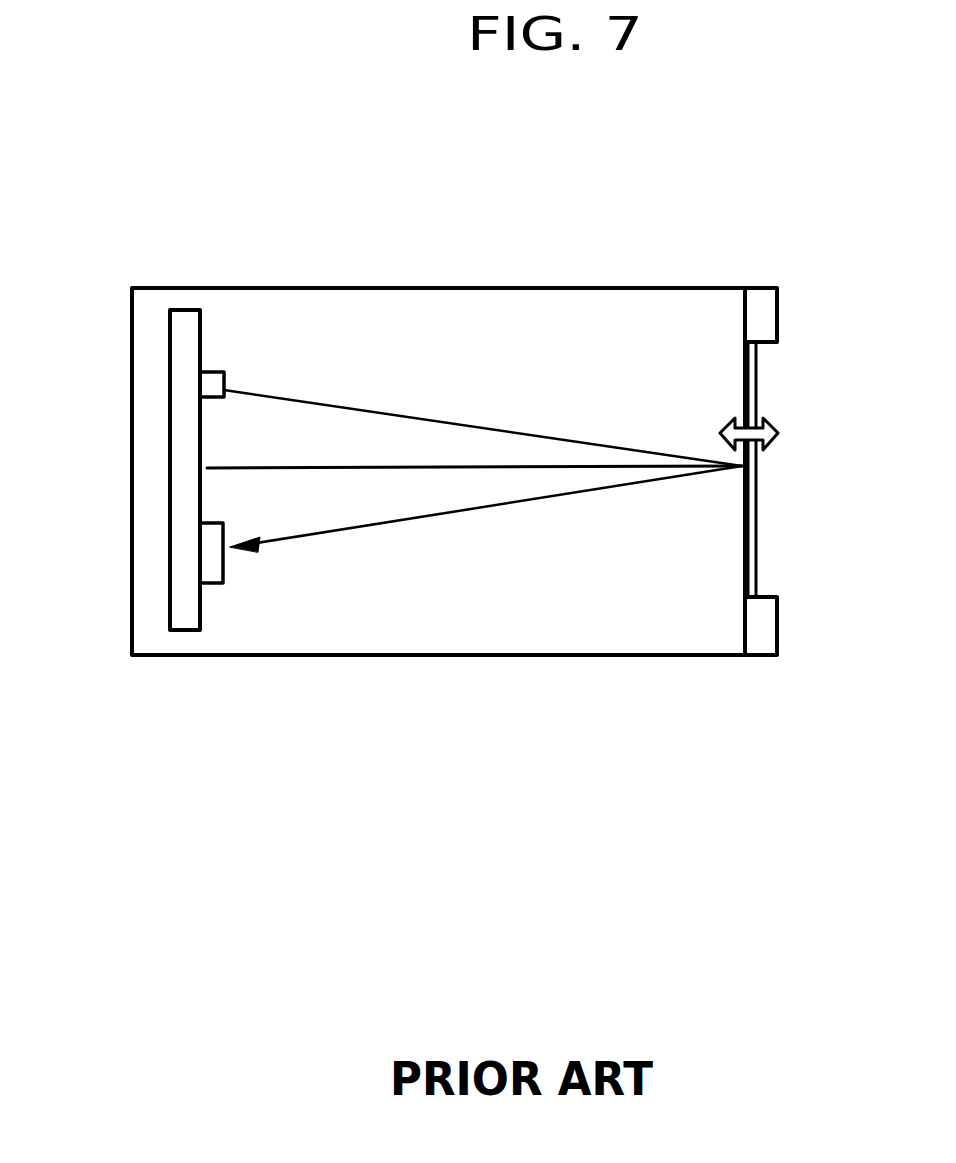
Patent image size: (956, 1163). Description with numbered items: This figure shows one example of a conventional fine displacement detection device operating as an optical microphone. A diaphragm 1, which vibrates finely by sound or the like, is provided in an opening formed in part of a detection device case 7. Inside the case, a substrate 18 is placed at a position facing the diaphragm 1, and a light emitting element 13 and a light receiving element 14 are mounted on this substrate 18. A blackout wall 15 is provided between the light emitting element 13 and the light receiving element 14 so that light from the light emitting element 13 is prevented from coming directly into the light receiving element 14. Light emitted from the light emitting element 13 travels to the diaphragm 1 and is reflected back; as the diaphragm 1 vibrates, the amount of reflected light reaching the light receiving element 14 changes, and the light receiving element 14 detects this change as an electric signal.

The diaphragm 1 is at (755, 500).
The detection device case 7 is at (310, 655).
The light emitting element 13 is at (213, 370).
The light receiving element 14 is at (197, 582).
The blackout wall 15 is at (260, 466).
The substrate 18 is at (180, 348).